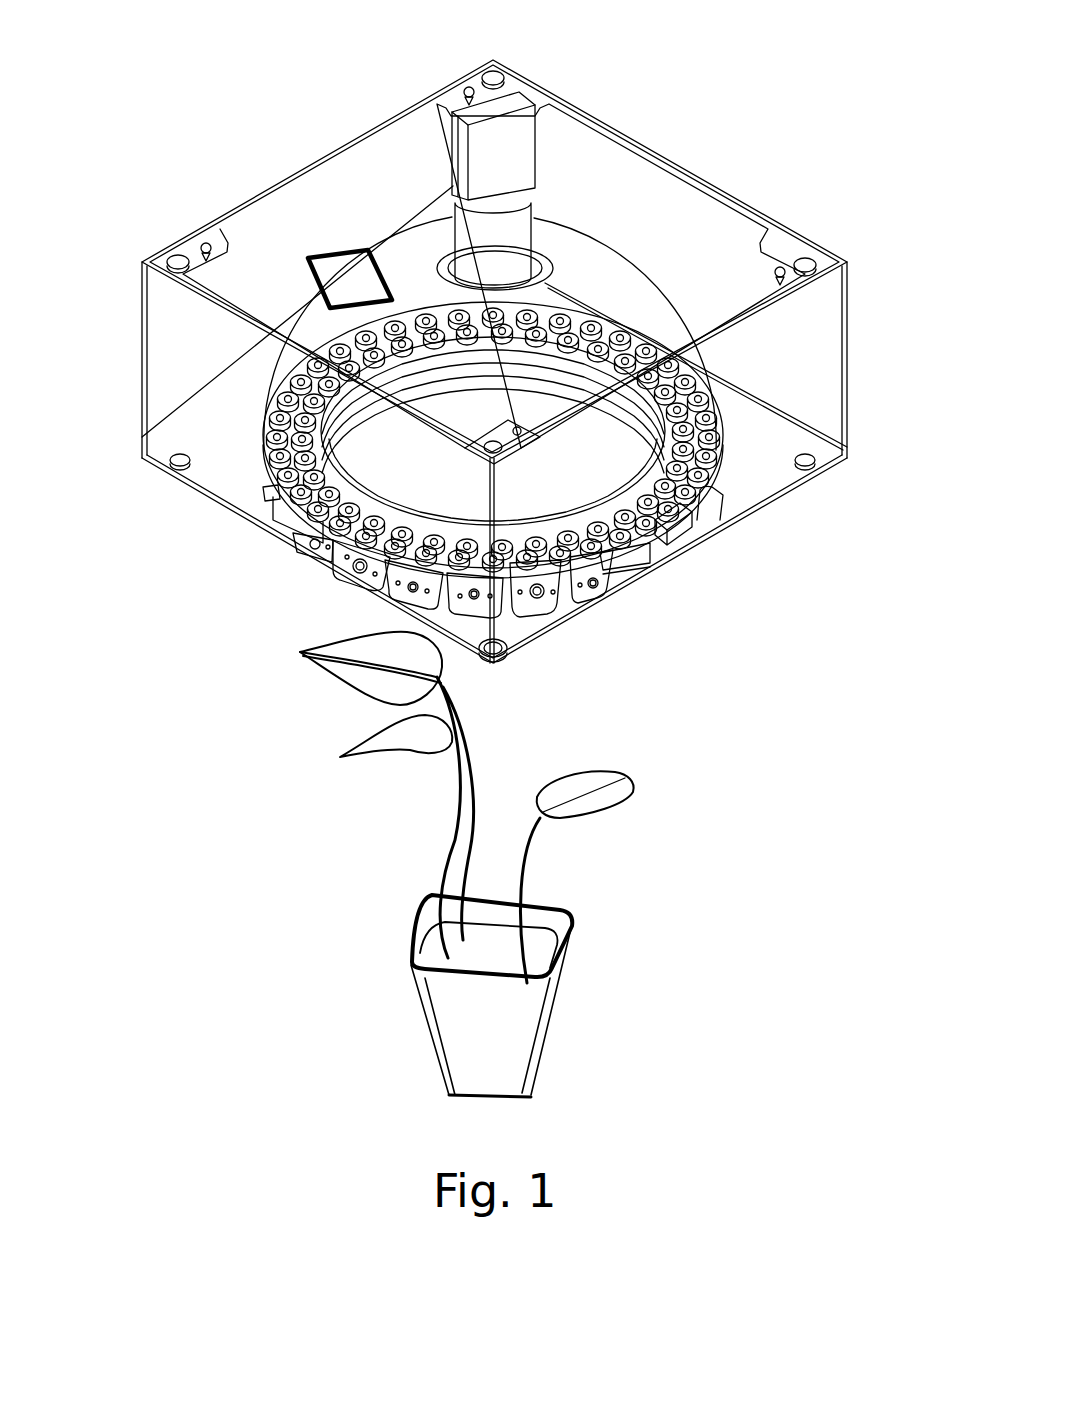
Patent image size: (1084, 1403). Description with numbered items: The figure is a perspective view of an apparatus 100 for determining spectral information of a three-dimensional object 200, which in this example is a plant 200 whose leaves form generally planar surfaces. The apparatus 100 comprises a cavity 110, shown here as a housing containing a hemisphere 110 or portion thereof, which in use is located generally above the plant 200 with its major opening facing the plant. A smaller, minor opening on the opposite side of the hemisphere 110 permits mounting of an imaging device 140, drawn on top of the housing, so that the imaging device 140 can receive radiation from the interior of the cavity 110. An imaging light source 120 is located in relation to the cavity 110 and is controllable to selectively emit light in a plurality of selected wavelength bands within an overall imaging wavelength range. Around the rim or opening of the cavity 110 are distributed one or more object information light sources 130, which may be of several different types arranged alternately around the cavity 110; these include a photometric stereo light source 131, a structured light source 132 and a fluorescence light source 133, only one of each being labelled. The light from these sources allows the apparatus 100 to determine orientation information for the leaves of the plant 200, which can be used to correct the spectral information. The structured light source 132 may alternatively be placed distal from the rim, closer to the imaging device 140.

The apparatus 100 is at (738, 137).
The cavity 110 is at (583, 257).
The imaging light source 120 is at (717, 463).
The object information (OI) light sources 130 is at (538, 632).
The photometric stereo light source 131 is at (597, 583).
The structured light source 132 is at (679, 588).
The fluorescence light source 133 is at (547, 597).
The imaging device 140 is at (463, 170).
The three-dimensional object (plant) 200 is at (590, 770).